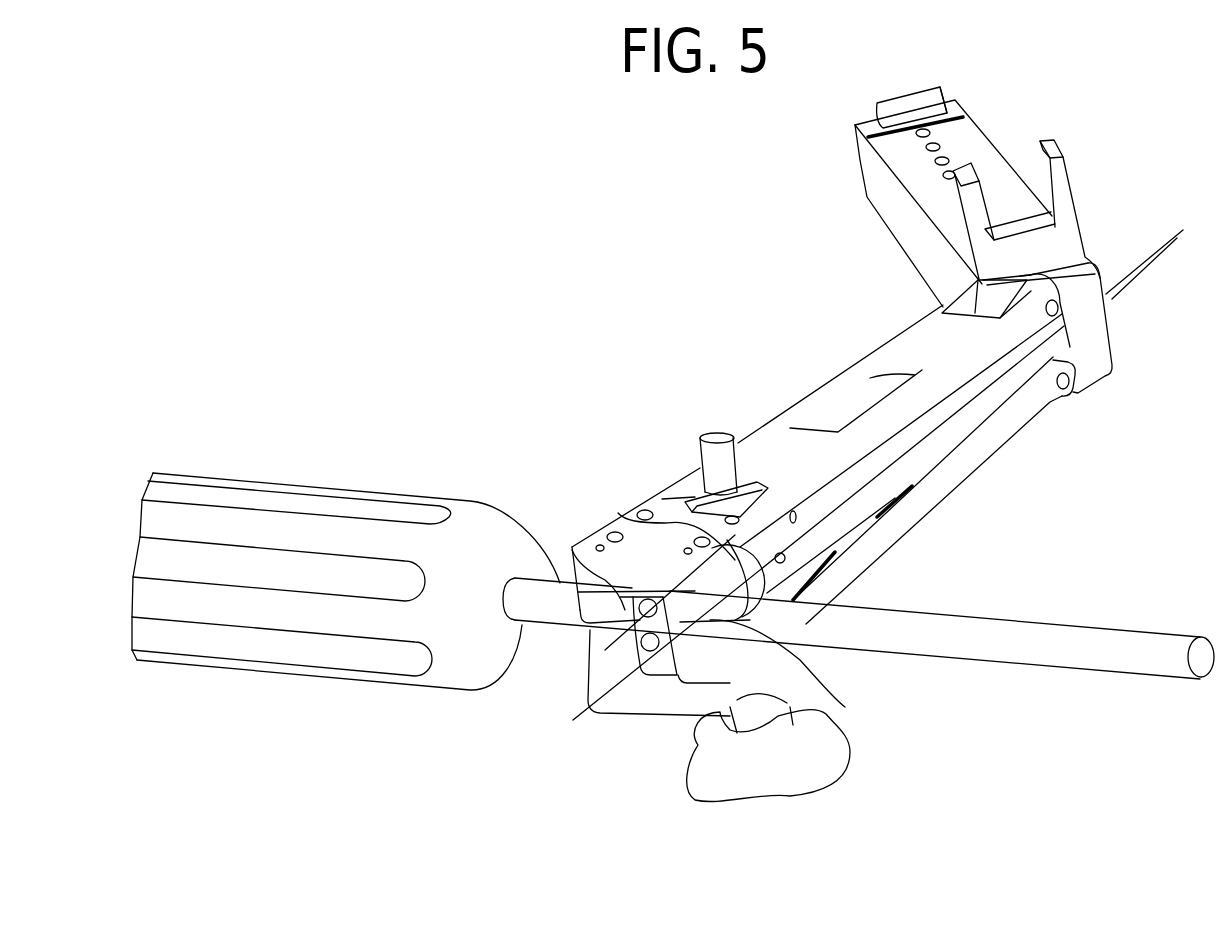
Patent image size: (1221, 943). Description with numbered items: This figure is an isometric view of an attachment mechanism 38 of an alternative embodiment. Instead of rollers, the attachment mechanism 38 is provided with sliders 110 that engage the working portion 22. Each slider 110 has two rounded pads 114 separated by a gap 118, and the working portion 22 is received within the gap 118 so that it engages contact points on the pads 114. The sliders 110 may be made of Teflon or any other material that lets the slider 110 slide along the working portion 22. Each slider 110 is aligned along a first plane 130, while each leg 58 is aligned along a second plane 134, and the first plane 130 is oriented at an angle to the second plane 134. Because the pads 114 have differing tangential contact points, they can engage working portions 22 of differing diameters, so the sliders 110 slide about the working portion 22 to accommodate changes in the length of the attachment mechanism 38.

The working portion 22 is at (1137, 663).
The attachment mechanism 38 is at (978, 475).
The leg 58 is at (905, 452).
The slider 110 is at (573, 597).
The rounded pad 114 is at (787, 600).
The gap 118 is at (618, 513).
The first plane 130 is at (977, 380).
The second plane 134 is at (576, 547).